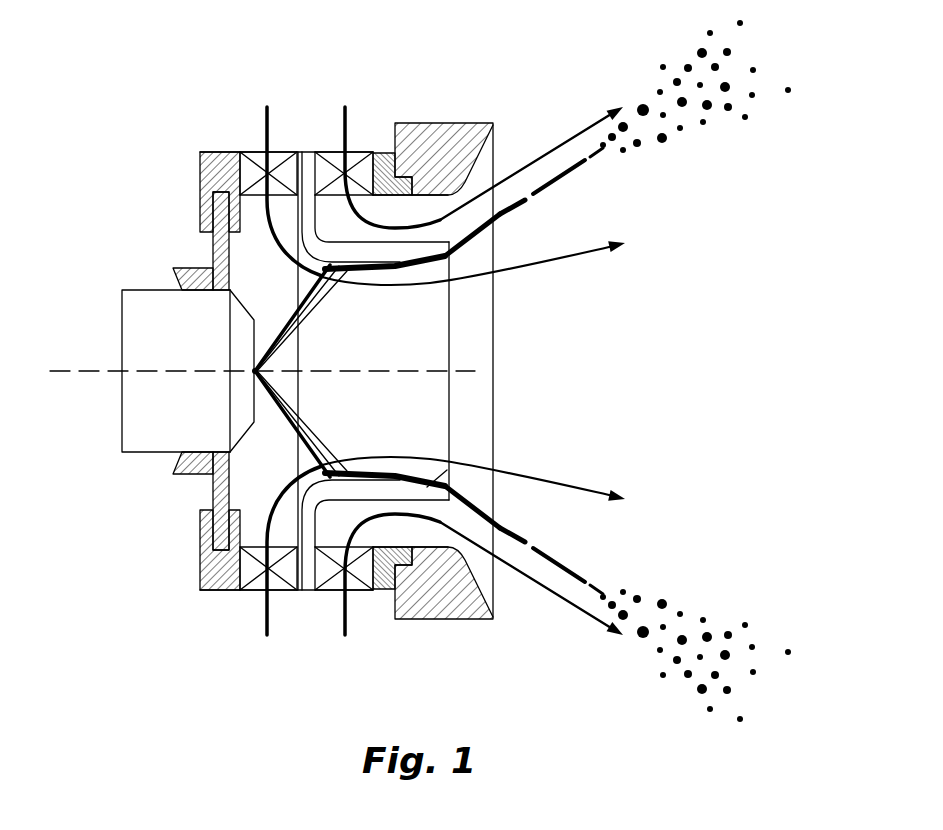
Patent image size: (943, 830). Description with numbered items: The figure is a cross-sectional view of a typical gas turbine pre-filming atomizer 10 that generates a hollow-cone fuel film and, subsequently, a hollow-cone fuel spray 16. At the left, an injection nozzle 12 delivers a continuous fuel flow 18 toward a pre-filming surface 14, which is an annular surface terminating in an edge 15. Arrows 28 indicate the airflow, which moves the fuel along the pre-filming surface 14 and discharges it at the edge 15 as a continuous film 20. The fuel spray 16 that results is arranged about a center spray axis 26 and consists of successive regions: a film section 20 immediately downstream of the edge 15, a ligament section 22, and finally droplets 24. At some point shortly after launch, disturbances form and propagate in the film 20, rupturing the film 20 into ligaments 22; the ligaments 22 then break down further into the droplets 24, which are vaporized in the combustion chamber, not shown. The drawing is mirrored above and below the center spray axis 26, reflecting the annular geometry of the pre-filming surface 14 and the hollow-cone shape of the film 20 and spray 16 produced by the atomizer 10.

The pre-filming atomizer 10 is at (104, 114).
The injection nozzle 12 is at (150, 310).
The pre-filming surface 14 is at (332, 262).
The edge 15 is at (445, 480).
The fuel spray 16 is at (630, 376).
The continuous fuel flow 18 is at (337, 297).
The film section 20 is at (415, 273).
The ligament section 22 is at (577, 173).
The droplets 24 is at (718, 68).
The center spray axis 26 is at (458, 366).
The arrows indicating airflow 28 is at (537, 160).